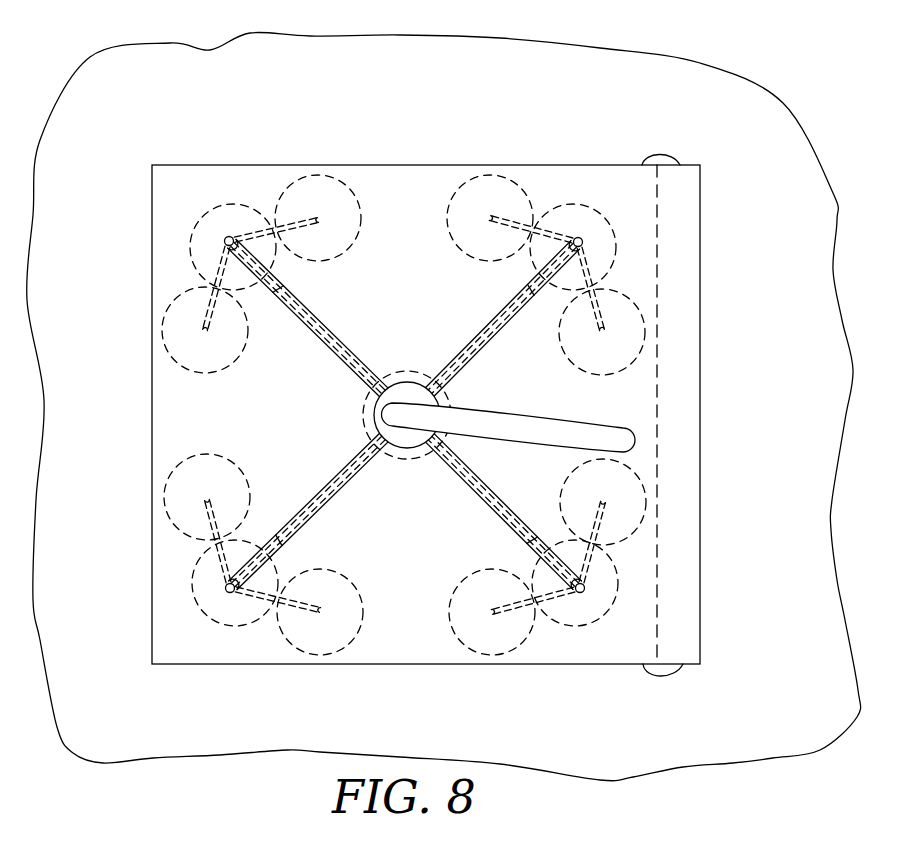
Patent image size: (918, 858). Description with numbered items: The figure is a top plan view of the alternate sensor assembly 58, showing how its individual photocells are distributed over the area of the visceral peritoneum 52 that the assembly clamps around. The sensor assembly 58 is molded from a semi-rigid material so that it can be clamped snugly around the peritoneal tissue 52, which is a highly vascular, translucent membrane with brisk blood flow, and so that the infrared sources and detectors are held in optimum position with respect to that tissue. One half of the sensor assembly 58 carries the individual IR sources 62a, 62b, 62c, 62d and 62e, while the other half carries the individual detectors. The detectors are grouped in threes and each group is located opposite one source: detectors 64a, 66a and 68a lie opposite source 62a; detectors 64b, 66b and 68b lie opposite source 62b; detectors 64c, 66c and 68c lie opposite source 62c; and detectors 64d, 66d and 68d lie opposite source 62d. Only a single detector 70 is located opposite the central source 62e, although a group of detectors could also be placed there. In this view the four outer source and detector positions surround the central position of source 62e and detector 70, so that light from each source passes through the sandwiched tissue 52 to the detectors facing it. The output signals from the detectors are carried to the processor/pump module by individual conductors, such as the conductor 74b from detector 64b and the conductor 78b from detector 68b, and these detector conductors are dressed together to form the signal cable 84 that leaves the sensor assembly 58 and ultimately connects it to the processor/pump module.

The visceral peritoneum 52 is at (316, 71).
The sensor assembly 58 is at (363, 140).
The IR source 62a is at (192, 587).
The IR source 62b is at (165, 250).
The IR source 62c is at (597, 207).
The IR source 62d is at (585, 628).
The IR source 62e is at (407, 458).
The IR detector 64a is at (313, 635).
The IR detector 64b is at (173, 325).
The IR detector 64c is at (493, 186).
The IR detector 64d is at (630, 495).
The IR detector 66a is at (220, 603).
The IR detector 66b is at (200, 220).
The IR detector 66c is at (607, 238).
The IR detector 66d is at (610, 587).
The IR detector 68a is at (178, 500).
The IR detector 68b is at (326, 196).
The IR detector 68c is at (635, 332).
The IR detector 68d is at (481, 633).
The detector 70 is at (405, 372).
The conductor 74b is at (207, 329).
The conductor 78b is at (313, 228).
The signal cable 84 is at (518, 412).